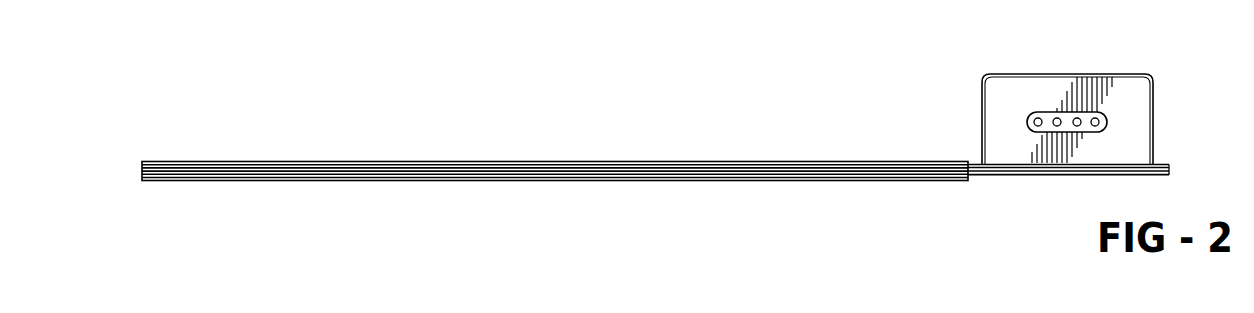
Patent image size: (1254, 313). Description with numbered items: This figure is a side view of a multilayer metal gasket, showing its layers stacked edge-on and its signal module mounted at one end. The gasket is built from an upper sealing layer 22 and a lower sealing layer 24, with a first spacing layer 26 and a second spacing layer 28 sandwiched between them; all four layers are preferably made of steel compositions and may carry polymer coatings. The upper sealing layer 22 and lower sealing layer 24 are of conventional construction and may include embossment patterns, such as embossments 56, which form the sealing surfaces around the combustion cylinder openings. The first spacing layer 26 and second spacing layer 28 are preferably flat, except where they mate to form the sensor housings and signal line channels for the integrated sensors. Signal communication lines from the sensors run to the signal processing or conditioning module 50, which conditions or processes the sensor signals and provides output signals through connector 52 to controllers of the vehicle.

The upper sealing layer 22 is at (882, 160).
The lower sealing layer 24 is at (835, 178).
The first spacing layer 26 is at (637, 168).
The second spacing layer 28 is at (340, 176).
The signal processing or conditioning module 50 is at (1122, 72).
The connector 52 is at (1087, 132).
The embossments 56 is at (428, 0).